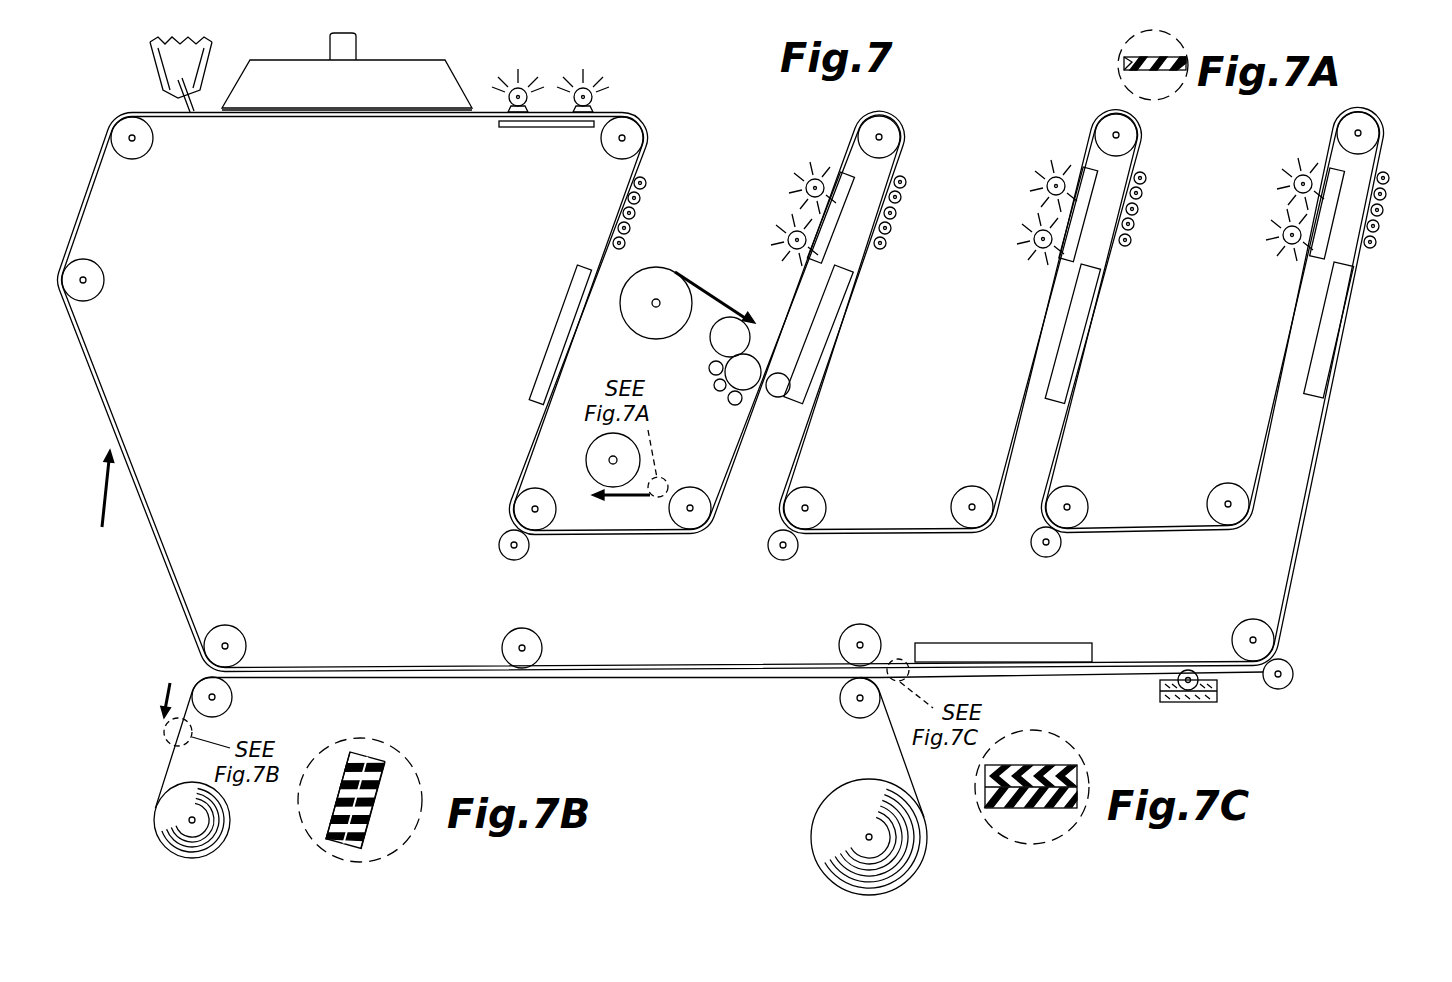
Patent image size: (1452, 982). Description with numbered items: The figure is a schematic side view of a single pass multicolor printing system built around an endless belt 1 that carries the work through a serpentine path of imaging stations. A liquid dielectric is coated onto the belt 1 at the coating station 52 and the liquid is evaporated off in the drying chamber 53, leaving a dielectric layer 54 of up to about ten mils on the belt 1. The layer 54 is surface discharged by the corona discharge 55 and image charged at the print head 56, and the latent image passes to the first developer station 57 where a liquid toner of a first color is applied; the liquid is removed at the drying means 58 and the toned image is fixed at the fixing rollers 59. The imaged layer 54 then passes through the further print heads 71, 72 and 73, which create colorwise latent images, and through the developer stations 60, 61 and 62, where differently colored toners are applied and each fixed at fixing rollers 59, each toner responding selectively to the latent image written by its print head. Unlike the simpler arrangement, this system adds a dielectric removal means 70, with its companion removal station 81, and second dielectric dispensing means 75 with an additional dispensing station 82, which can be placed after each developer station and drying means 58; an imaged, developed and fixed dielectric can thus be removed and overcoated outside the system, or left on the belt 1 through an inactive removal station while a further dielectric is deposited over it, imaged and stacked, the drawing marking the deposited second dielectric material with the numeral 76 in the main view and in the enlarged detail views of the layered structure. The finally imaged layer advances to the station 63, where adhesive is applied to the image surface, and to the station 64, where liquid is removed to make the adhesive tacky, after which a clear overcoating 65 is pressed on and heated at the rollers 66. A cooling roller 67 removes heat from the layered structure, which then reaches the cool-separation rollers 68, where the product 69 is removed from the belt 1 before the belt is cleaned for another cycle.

In FIG. 7, the endless belt 1 is at (288, 118).
In FIG. 7C, the endless belt 1 is at (1020, 765).
In FIG. 7, the coating station 52 is at (158, 68).
In FIG. 7, the drying chamber 53 is at (303, 68).
In FIG. 7, the dielectric layer 54 is at (476, 110).
In FIG. 7B, the dielectric layer 54 is at (331, 815).
In FIG. 7C, the dielectric layer 54 is at (1078, 787).
In FIG. 7, the corona discharge 55 is at (522, 80).
In FIG. 7, the print head 56 is at (587, 84).
In FIG. 7, the first developer station 57 is at (645, 184).
In FIG. 7, the drying means 58 is at (563, 301).
In FIG. 7, the fixing rollers 59 is at (500, 546).
In FIG. 7, the developer station 60 is at (906, 183).
In FIG. 7, the developer station 61 is at (1146, 179).
In FIG. 7, the developer station 62 is at (1389, 179).
In FIG. 7, the adhesive station 63 is at (1186, 703).
In FIG. 7, the adhesive drying station 64 is at (998, 646).
In FIG. 7, the clear overcoating 65 is at (872, 785).
In FIG. 7B, the clear overcoating 65 is at (363, 806).
In FIG. 7, the heated rollers 66 is at (838, 645).
In FIG. 7, the cooling roller 67 is at (541, 648).
In FIG. 7, the cool-separation rollers 68 is at (246, 648).
In FIG. 7, the product 69 is at (165, 767).
In FIG. 7, the dielectric removal means 70 is at (693, 488).
In FIG. 7, the print head 71 is at (806, 180).
In FIG. 7, the print head 72 is at (1048, 178).
In FIG. 7, the print head 73 is at (1296, 178).
In FIG. 7, the dielectric dispensing means 75 is at (652, 267).
In FIG. 7, the material layer 76 is at (693, 288).
In FIG. 7B, the material layer 76 is at (362, 755).
In FIG. 7C, the material layer 76 is at (1078, 800).
In FIG. 7, the removal station 81 is at (586, 460).
In FIG. 7, the dielectric dispensing station 82 is at (711, 339).